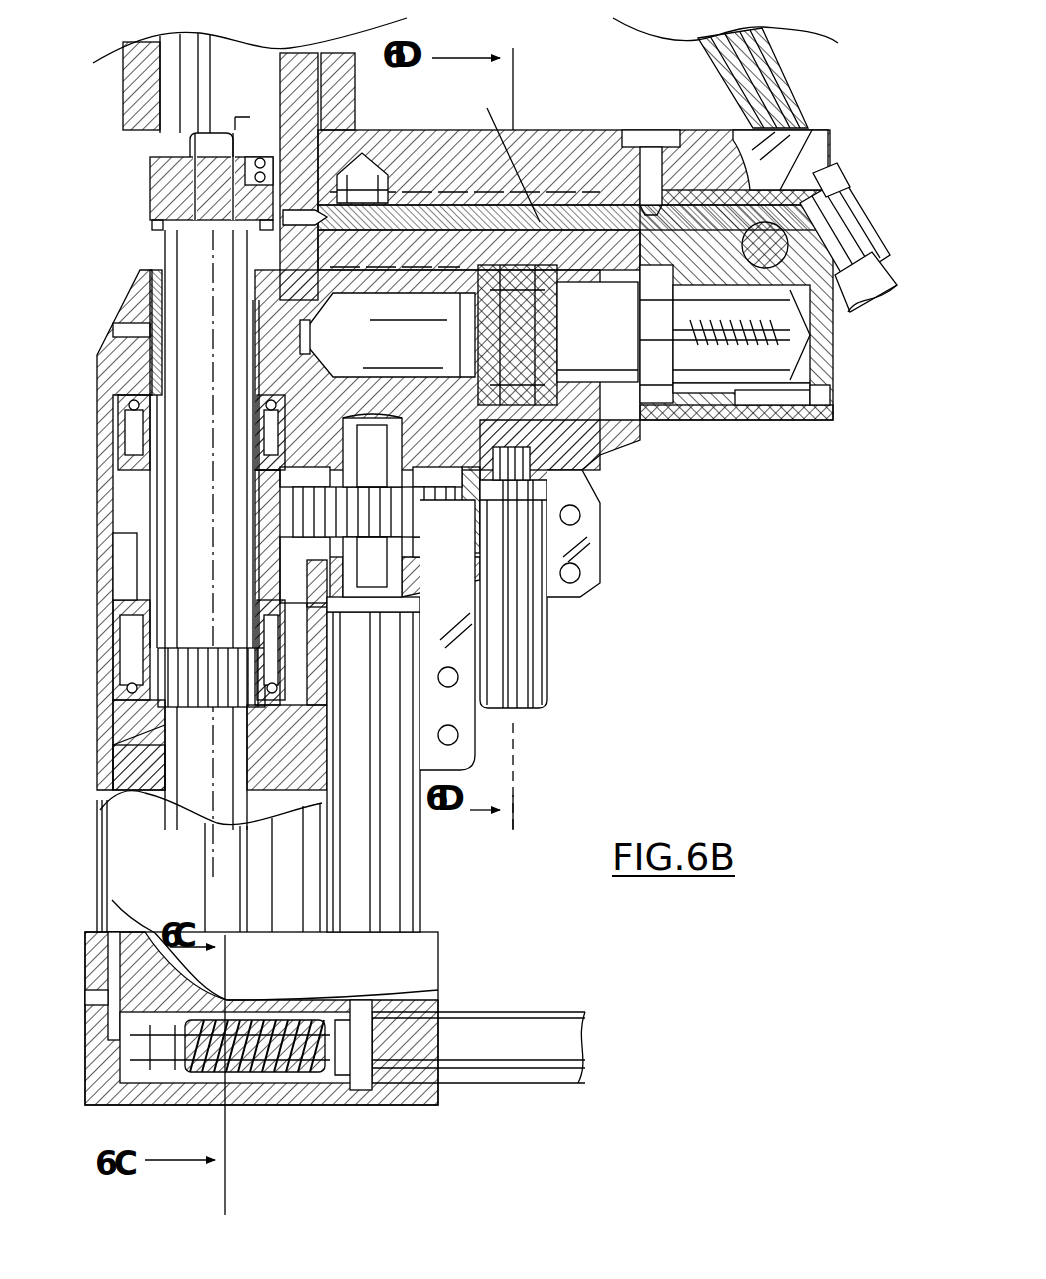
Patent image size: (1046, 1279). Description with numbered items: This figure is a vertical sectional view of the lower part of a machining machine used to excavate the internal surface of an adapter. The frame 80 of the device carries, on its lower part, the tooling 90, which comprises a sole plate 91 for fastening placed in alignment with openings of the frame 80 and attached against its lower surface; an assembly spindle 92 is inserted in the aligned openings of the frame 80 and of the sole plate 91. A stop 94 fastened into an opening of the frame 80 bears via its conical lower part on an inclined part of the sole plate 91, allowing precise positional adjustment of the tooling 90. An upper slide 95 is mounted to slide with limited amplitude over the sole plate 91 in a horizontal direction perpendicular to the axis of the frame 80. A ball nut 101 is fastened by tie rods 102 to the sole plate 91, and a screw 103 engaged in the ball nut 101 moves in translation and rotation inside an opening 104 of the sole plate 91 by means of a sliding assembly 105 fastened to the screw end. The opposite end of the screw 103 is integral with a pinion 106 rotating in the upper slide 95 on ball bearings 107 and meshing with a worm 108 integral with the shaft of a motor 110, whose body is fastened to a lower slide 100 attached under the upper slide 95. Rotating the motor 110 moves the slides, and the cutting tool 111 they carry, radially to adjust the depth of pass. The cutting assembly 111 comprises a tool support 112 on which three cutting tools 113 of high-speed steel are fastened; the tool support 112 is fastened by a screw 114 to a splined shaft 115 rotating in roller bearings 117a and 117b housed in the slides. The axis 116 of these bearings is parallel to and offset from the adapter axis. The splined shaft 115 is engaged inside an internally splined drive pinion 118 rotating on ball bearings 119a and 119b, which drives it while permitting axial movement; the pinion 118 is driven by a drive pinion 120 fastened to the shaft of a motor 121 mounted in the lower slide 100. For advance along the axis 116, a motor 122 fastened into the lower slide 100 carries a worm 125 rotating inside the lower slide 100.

The frame 80 is at (478, 320).
The tooling 90 is at (674, 584).
The sole plate 91 is at (508, 150).
The assembly spindle 92 is at (797, 170).
The stop 94 is at (639, 145).
The upper slide 95 is at (340, 530).
The lower slide 100 is at (338, 783).
The ball nut 101 is at (608, 350).
The tie rods 102 is at (833, 422).
The screw 103 is at (741, 419).
The opening 104 is at (772, 428).
The sliding assembly 105 is at (776, 334).
The pinion 106 is at (387, 337).
The ball bearings 107 is at (597, 332).
The worm 108 is at (544, 620).
The motor 110 is at (542, 577).
The cutting tool 111 is at (90, 238).
The tool support 112 is at (159, 181).
The cutting tools 113 is at (242, 127).
The screw 114 is at (152, 149).
The splined shaft 115 is at (222, 633).
The axis 116 is at (175, 581).
The roller bearing 117a is at (103, 328).
The roller bearing 117b is at (95, 762).
The drive pinion 118 is at (81, 569).
The ball bearing 119a is at (155, 460).
The ball bearing 119b is at (155, 650).
The drive pinion 120 is at (470, 531).
The motor 121 is at (406, 764).
The motor 122 is at (467, 1025).
The worm 125 is at (251, 1013).